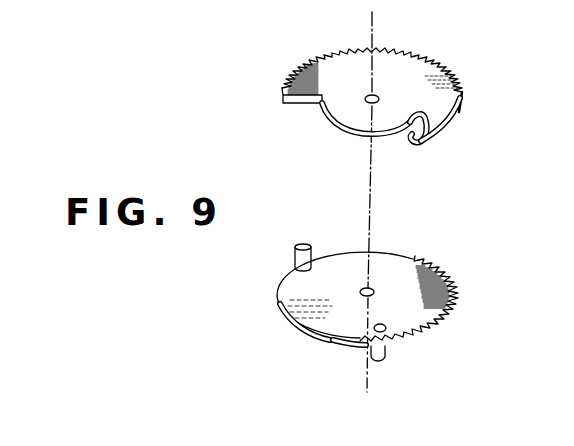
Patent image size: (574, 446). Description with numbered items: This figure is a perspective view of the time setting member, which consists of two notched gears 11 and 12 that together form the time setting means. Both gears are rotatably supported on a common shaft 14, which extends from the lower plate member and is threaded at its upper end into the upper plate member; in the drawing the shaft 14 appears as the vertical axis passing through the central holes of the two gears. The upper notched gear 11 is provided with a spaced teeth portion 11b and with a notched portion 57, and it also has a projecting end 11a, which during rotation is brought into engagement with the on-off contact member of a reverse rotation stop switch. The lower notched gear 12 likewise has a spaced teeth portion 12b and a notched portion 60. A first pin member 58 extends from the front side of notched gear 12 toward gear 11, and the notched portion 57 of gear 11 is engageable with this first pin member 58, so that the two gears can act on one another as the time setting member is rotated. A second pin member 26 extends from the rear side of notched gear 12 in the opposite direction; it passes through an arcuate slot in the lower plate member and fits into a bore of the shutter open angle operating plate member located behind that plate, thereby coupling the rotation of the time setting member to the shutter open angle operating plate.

The shaft 14 is at (375, 31).
The notched gear 11 is at (322, 68).
The notched portion 57 is at (330, 134).
The projecting end 11a is at (426, 142).
The spaced teeth portion 11b is at (453, 118).
The notched portion 60 is at (385, 252).
The notched gear 12 is at (302, 283).
The spaced teeth portion 12b is at (300, 335).
The first pin member 58 is at (304, 244).
The second pin member 26 is at (382, 358).